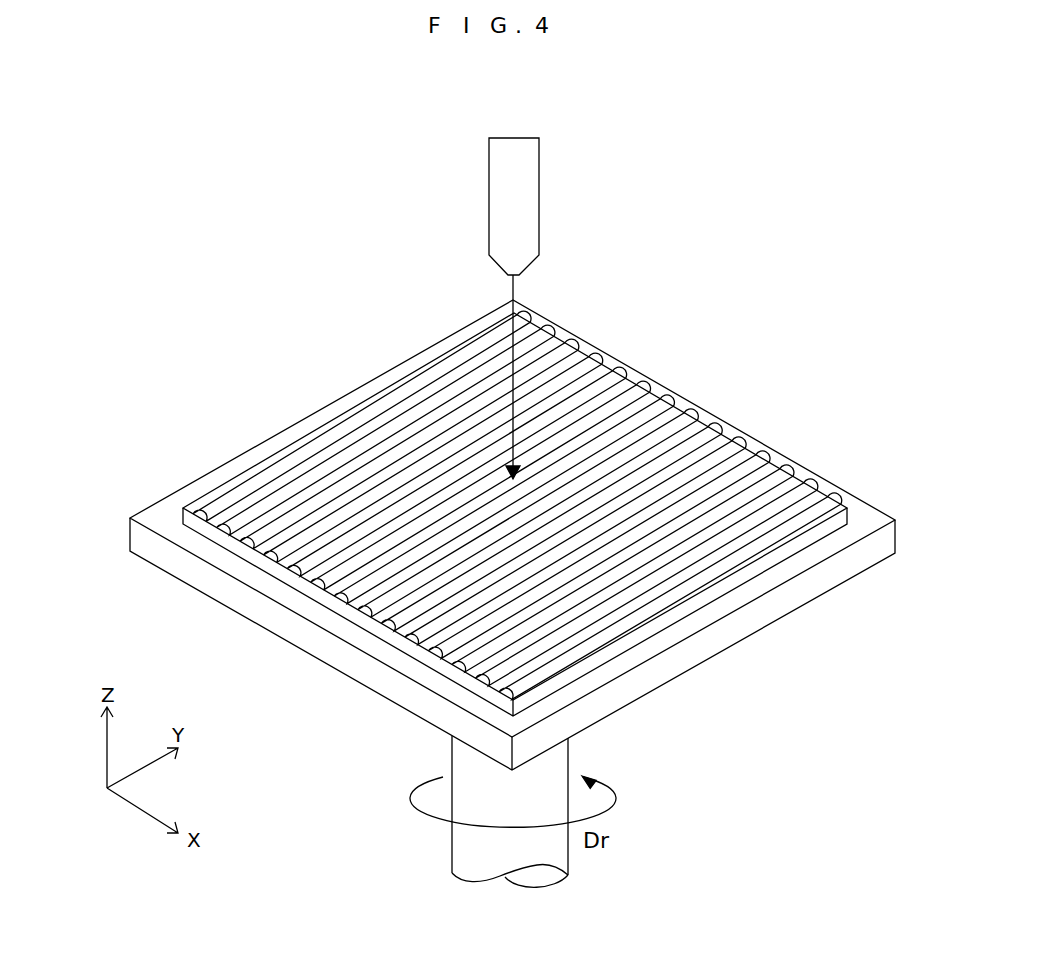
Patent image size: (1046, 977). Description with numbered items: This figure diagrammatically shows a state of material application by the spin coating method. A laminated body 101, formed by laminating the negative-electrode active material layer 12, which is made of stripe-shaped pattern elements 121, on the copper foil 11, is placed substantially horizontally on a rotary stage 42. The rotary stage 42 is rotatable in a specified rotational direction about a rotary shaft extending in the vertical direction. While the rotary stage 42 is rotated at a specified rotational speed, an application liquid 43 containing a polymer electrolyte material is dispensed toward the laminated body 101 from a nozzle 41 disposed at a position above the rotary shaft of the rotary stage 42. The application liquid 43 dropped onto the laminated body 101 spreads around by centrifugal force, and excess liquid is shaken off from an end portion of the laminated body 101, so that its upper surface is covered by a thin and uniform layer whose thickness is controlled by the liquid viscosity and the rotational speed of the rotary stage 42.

The nozzle 41 is at (539, 178).
The application liquid 43 is at (512, 292).
The rotary stage 42 is at (308, 415).
The laminated body 101 is at (832, 307).
The copper foil 11 is at (847, 520).
The negative-electrode active material layer 12 is at (727, 325).
The stripe-shaped pattern element 121 is at (653, 378).